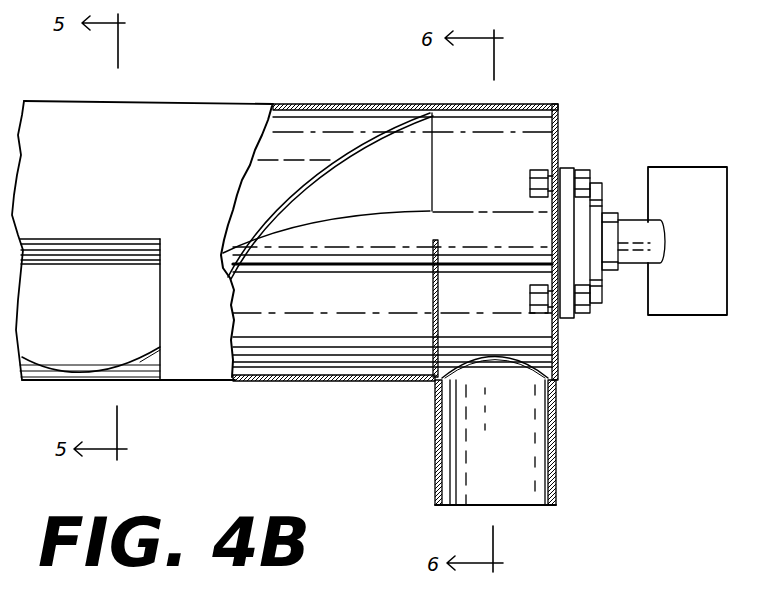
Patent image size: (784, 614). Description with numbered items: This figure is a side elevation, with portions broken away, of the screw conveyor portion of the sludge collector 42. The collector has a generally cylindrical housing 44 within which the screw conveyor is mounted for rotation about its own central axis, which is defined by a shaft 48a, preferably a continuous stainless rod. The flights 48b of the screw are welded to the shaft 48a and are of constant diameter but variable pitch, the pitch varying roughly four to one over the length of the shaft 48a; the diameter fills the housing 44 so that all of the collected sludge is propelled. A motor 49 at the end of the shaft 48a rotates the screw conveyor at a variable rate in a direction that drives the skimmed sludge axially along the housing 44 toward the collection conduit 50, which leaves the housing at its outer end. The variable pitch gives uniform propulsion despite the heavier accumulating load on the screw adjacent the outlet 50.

The sludge collector 42 is at (539, 88).
The cylindrical housing 44 is at (217, 102).
The shaft 48a is at (470, 212).
The flights 48b is at (316, 178).
The motor 49 is at (702, 287).
The collection conduit 50 is at (557, 441).